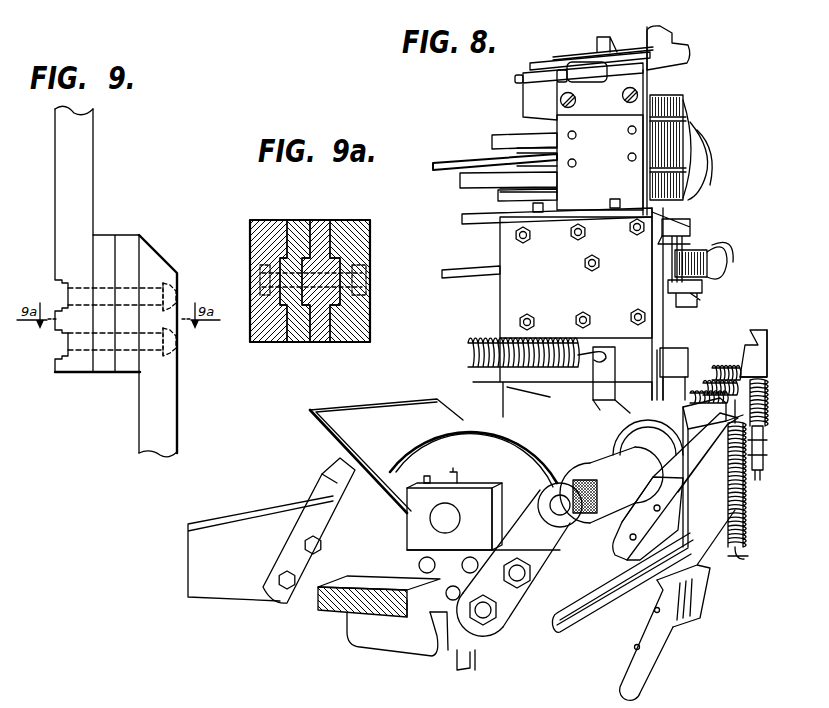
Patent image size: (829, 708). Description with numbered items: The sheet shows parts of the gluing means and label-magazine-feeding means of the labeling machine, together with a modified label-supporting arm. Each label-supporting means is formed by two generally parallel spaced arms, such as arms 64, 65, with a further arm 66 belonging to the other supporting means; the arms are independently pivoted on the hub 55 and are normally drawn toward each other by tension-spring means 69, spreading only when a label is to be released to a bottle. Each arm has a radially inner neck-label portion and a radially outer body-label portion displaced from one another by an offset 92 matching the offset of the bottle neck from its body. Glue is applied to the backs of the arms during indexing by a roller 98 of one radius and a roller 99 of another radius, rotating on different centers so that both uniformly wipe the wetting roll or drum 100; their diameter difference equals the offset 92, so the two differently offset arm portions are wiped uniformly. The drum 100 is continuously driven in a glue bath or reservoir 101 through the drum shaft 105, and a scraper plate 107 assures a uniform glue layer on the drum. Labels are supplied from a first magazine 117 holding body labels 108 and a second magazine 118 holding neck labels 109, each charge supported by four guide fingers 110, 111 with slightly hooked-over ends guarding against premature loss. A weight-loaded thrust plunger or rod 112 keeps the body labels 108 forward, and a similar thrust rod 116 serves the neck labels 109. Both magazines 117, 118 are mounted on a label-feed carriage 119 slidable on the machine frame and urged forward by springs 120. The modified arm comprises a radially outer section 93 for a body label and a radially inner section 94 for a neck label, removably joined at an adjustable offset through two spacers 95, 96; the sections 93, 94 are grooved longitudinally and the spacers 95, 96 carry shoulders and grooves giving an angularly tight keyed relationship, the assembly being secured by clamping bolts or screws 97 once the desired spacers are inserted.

In FIG. 8, the hub 55 is at (765, 441).
In FIG. 8, the supporting arm 64 is at (625, 542).
In FIG. 8, the supporting arm 65 is at (622, 677).
In FIG. 8, the supporting arm 66 is at (758, 333).
In FIG. 8, the tension-spring means 69 is at (766, 416).
In FIG. 8, the offset 92 is at (752, 348).
In FIG. 9, the radially outer section 93 is at (62, 193).
In FIG. 9A, the radially outer section 93 is at (264, 226).
In FIG. 9, the radially inner section 94 is at (178, 407).
In FIG. 9A, the radially inner section 94 is at (352, 226).
In FIG. 9, the spacer 95 is at (128, 235).
In FIG. 9A, the spacer 95 is at (316, 225).
In FIG. 9, the spacer 96 is at (105, 235).
In FIG. 9, the clamping bolts or screws 97 is at (62, 281).
In FIG. 9A, the clamping bolts or screws 97 is at (367, 262).
In FIG. 8, the roller 98 is at (600, 457).
In FIG. 8, the roller 99 is at (617, 443).
In FIG. 8, the wetting roll or drum 100 is at (526, 425).
In FIG. 8, the glue bath or reservoir 101 is at (235, 535).
In FIG. 8, the drum shaft 105 is at (443, 532).
In FIG. 8, the scraper plate 107 is at (445, 409).
In FIG. 8, the body labels 108 is at (692, 113).
In FIG. 8, the neck labels 109 is at (703, 289).
In FIG. 8, the guide fingers 110 is at (699, 133).
In FIG. 8, the guide fingers 111 is at (714, 256).
In FIG. 8, the thrust plunger or rod 112 is at (449, 163).
In FIG. 8, the thrust rod 116 is at (455, 282).
In FIG. 8, the first magazine 117 is at (652, 110).
In FIG. 8, the second magazine 118 is at (684, 226).
In FIG. 8, the label-feed carriage 119 is at (681, 367).
In FIG. 8, the springs 120 is at (548, 341).